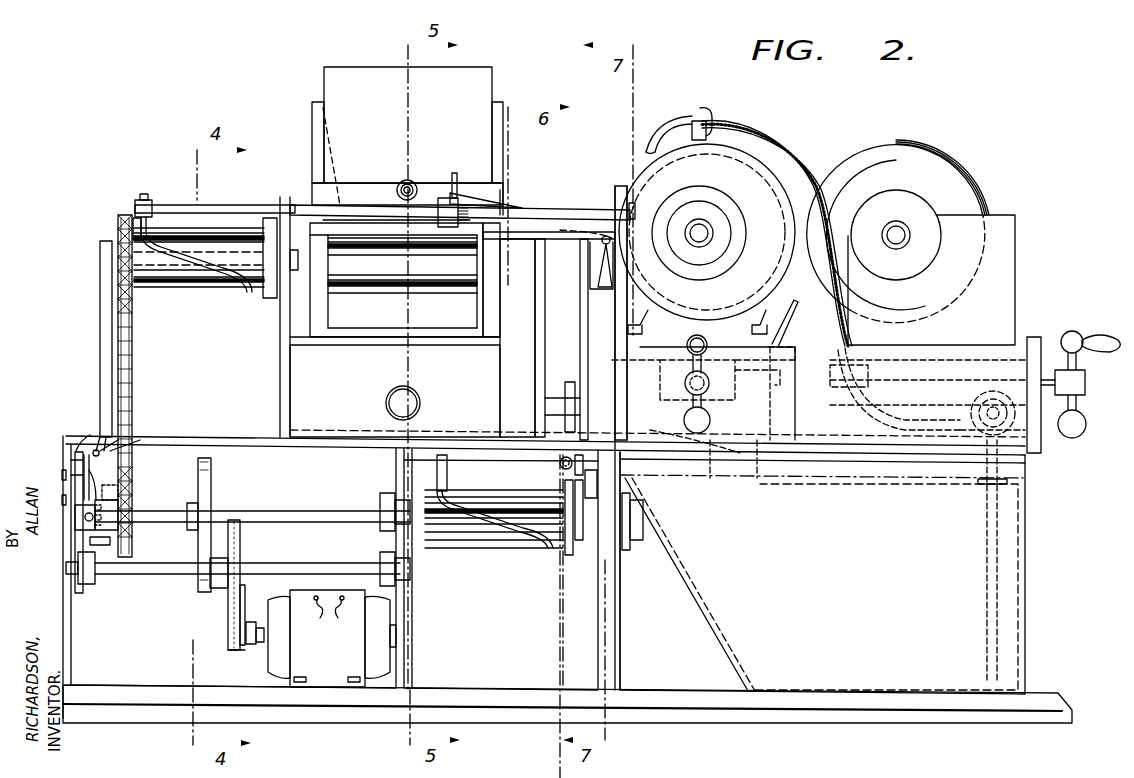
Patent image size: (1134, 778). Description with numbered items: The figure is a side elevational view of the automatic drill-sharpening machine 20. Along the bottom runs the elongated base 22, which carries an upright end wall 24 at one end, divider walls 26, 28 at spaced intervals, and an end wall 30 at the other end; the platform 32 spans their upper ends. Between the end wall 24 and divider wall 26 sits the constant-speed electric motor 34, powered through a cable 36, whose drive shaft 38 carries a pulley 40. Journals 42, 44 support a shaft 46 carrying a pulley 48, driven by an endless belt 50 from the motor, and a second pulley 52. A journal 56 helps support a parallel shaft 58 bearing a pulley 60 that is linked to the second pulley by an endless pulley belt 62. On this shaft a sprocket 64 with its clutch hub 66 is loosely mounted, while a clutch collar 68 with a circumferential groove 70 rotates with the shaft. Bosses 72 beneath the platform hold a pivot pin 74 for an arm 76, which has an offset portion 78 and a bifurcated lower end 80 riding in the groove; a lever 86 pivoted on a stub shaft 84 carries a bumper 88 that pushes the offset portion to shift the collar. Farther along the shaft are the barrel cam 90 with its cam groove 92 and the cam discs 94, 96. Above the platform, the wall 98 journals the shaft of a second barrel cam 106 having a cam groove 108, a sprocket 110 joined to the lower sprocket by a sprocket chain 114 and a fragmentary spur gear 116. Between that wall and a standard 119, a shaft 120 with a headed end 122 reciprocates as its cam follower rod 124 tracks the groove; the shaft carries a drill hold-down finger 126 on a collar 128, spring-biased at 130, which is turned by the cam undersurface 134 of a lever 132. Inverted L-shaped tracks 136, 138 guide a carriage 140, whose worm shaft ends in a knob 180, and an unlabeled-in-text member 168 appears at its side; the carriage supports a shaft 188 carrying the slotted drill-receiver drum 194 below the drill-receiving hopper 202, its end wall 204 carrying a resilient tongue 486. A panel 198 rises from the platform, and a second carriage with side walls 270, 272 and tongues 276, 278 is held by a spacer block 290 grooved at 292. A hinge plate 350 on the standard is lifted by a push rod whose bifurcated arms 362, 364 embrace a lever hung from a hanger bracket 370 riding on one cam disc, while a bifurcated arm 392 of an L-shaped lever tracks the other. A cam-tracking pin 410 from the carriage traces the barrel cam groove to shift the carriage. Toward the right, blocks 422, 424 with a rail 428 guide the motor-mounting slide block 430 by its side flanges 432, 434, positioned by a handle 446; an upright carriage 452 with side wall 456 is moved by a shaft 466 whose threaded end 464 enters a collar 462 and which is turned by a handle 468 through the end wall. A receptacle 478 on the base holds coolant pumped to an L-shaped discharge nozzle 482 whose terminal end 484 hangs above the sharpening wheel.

The automatic drill-sharpening machine 20 is at (270, 70).
The base 22 is at (940, 724).
The end wall 24 is at (73, 642).
The divider wall 26 is at (404, 674).
The divider wall 28 is at (612, 675).
The end wall 30 is at (1026, 640).
The platform 32 is at (862, 455).
The electric motor 34 is at (328, 677).
The cable 36 is at (329, 615).
The drive shaft 38 is at (260, 620).
The pulley 40 is at (226, 642).
The journal 42 is at (88, 590).
The journal 44 is at (380, 560).
The shaft 46 is at (285, 566).
The pulley 48 is at (240, 555).
The endless belt 50 is at (228, 600).
The second pulley 52 is at (214, 588).
The journal 56 is at (386, 492).
The shaft 58 is at (300, 522).
The pulley 60 is at (211, 495).
The endless pulley belt 62 is at (186, 545).
The sprocket 64 is at (118, 502).
The clutch hub 66 is at (96, 545).
The clutch collar 68 is at (112, 490).
The circumferential groove 70 is at (90, 530).
The bosses 72 is at (118, 440).
The pivot pin 74 is at (90, 451).
The arm 76 is at (82, 465).
The offset portion 78 is at (140, 440).
The bifurcated lower end 80 is at (78, 505).
The stub shaft 84 is at (76, 472).
The lever 86 is at (90, 481).
The bumper 88 is at (84, 450).
The barrel cam 90 is at (484, 548).
The cam groove 92 is at (530, 548).
The cam disc 94 is at (560, 575).
The cam disc 96 is at (580, 557).
The wall 98 is at (98, 343).
The second barrel cam 106 is at (212, 290).
The cam groove 108 is at (246, 292).
The sprocket 110 is at (118, 228).
The sprocket chain 114 is at (132, 357).
The fragmentary spur gear 116 is at (266, 302).
The standard 119 is at (613, 328).
The shaft 120 is at (225, 204).
The headed end 122 is at (637, 211).
The cam follower rod 124 is at (152, 208).
The drill hold-down finger 126 is at (458, 180).
The collar 128 is at (441, 197).
The spring 130 is at (467, 233).
The lever 132 is at (556, 205).
The cam undersurface 134 is at (490, 205).
The track 136 is at (385, 262).
The track 138 is at (508, 458).
The carriage 140 is at (288, 392).
The post 168 is at (458, 340).
The knob 180 is at (387, 396).
The shaft 188 is at (300, 262).
The drill-receiver drum 194 is at (352, 268).
The panel 198 is at (502, 185).
The drill-receiving hopper 202 is at (348, 65).
The end wall 204 is at (312, 140).
The side wall 270 is at (534, 362).
The side wall 272 is at (580, 317).
The tongue 276 is at (560, 465).
The tongue 278 is at (632, 470).
The spacer block 290 is at (583, 265).
The groove 292 is at (580, 242).
The hinge plate 350 is at (560, 227).
The bifurcated arm 362 is at (574, 480).
The bifurcated arm 364 is at (598, 490).
The hanger bracket 370 is at (625, 540).
The bifurcated arm 392 is at (565, 385).
The cam-tracking pin 410 is at (447, 470).
The block 422 is at (722, 480).
The block 424 is at (760, 480).
The rail 428 is at (782, 328).
The motor-mounting slide block 430 is at (757, 383).
The side flange 432 is at (628, 362).
The side flange 434 is at (779, 393).
The handle 446 is at (703, 334).
The carriage 452 is at (1017, 250).
The side wall 456 is at (1010, 316).
The internally-threaded collar 462 is at (928, 415).
The threaded end 464 is at (844, 409).
The shaft 466 is at (1052, 375).
The handle 468 is at (1106, 338).
The receptacle 478 is at (1010, 575).
The discharge nozzle 482 is at (700, 108).
The terminal end 484 is at (645, 150).
The resilient tongue 486 is at (335, 155).